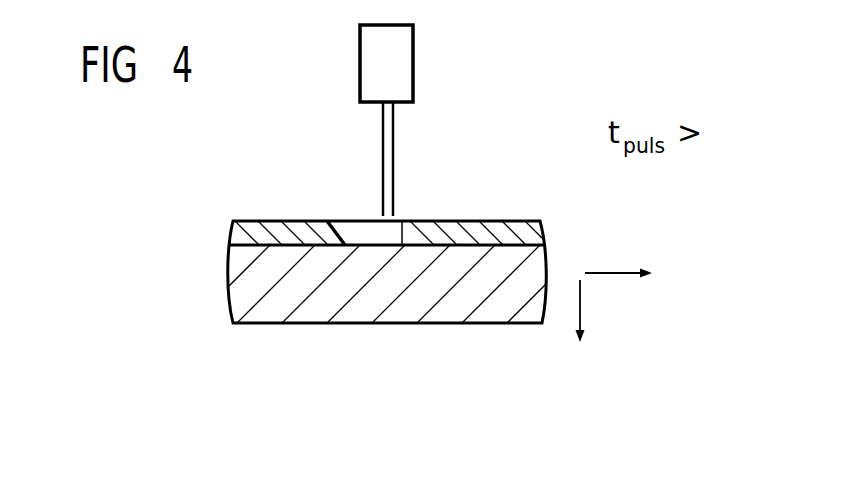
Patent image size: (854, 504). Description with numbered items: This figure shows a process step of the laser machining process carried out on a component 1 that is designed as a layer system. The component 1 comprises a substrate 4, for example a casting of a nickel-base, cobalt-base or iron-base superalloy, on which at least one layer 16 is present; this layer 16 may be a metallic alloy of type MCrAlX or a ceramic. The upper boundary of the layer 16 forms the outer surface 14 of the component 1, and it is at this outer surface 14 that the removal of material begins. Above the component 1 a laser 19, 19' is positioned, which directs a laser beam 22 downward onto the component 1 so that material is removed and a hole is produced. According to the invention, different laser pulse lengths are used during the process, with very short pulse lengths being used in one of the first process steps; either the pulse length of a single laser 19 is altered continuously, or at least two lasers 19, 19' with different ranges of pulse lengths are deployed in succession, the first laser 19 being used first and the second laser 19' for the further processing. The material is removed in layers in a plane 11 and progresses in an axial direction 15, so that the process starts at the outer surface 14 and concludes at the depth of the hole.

The component 1 is at (398, 272).
The substrate 4 is at (467, 300).
The outer surface 14 is at (502, 221).
The layer 16 is at (518, 232).
The laser 19 is at (457, 63).
The second laser 19' is at (386, 63).
The laser beam 22 is at (394, 167).
The plane 11 is at (635, 276).
The axial direction 15 is at (581, 332).